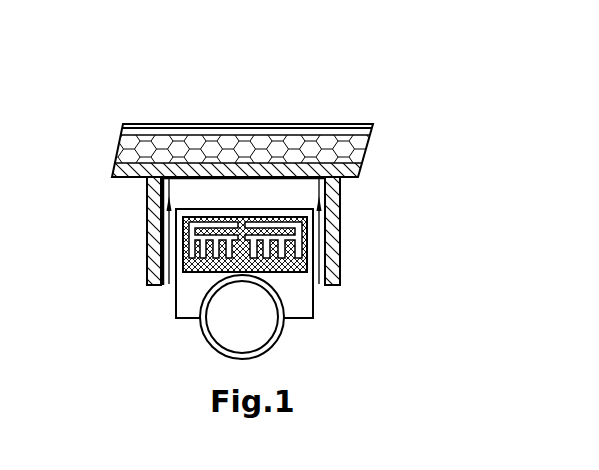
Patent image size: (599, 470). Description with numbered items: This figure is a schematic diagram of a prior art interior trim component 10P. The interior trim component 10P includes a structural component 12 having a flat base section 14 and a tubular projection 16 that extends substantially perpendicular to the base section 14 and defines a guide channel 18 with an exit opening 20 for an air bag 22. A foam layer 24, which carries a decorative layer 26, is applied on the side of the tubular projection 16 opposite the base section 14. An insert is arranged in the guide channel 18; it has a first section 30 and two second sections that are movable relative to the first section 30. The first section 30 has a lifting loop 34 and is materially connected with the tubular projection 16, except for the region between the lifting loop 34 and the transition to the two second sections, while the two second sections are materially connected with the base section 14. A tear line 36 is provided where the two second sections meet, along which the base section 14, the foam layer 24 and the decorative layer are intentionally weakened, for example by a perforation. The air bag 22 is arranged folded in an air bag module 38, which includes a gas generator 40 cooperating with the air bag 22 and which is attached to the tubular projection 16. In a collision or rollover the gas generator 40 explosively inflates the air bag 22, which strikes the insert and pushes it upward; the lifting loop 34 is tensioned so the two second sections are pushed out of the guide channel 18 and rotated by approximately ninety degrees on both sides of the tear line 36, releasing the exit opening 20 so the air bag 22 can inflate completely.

The interior trim component 10P is at (104, 75).
The structural component 12 is at (216, 143).
The base section 14 is at (132, 170).
The tubular projection 16 is at (152, 247).
The guide channel 18 is at (244, 249).
The exit opening 20 is at (328, 146).
The air bag 22 is at (306, 260).
The foam layer 24 is at (155, 140).
The decorative layer 26 is at (183, 133).
The first section 30 is at (321, 246).
The lifting loop 34 is at (321, 205).
The tear line 36 is at (241, 183).
The air bag module 38 is at (158, 322).
The gas generator 40 is at (268, 328).